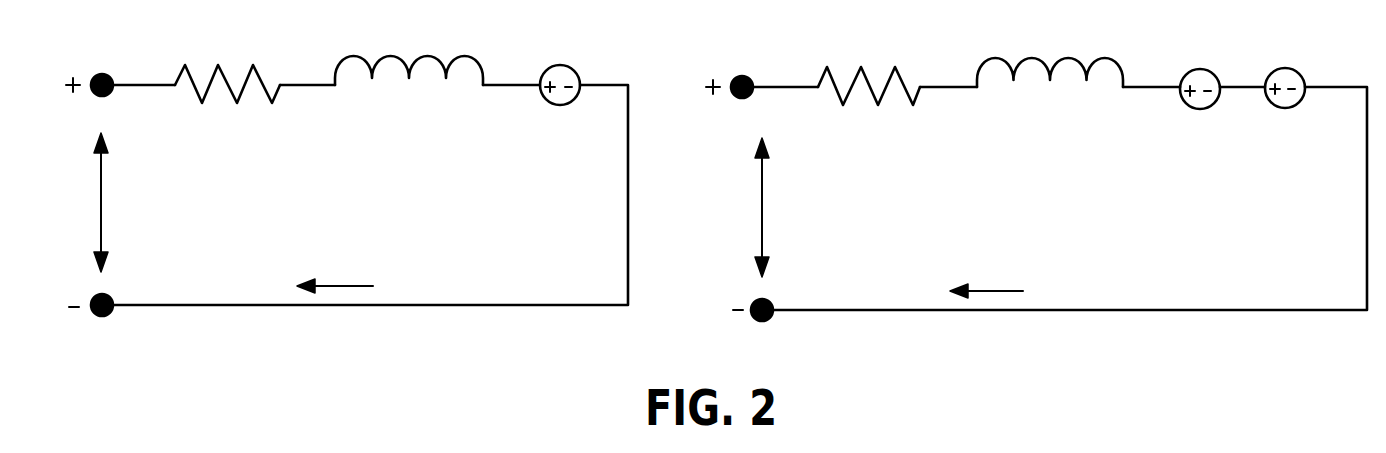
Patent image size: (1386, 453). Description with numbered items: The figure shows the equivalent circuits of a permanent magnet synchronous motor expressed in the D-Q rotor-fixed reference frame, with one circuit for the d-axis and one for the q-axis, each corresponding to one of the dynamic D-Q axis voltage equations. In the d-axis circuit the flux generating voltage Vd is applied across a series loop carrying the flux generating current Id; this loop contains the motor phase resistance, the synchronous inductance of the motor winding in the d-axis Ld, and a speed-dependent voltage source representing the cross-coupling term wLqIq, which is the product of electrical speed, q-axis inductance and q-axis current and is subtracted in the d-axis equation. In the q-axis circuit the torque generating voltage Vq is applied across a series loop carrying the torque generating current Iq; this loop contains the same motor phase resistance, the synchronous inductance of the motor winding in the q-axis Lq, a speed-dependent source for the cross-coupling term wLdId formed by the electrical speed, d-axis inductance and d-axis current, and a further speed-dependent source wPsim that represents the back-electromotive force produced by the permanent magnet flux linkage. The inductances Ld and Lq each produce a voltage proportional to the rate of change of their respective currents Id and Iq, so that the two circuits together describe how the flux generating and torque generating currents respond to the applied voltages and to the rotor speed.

The synchronous inductance of motor winding in d-axis Ld is at (409, 54).
The cross-coupling speed voltage term ωLqIq wLqIq is at (548, 64).
The flux generating voltage Vd is at (123, 202).
The flux generating current Id is at (335, 273).
The synchronous inductance of motor winding in q-axis Lq is at (1050, 55).
The cross-coupling speed voltage term ωLdId wLdId is at (1193, 73).
The permanent magnet back-EMF term ωΨm wPsim is at (1289, 73).
The torque generating voltage Vq is at (785, 207).
The torque generating current Iq is at (986, 278).